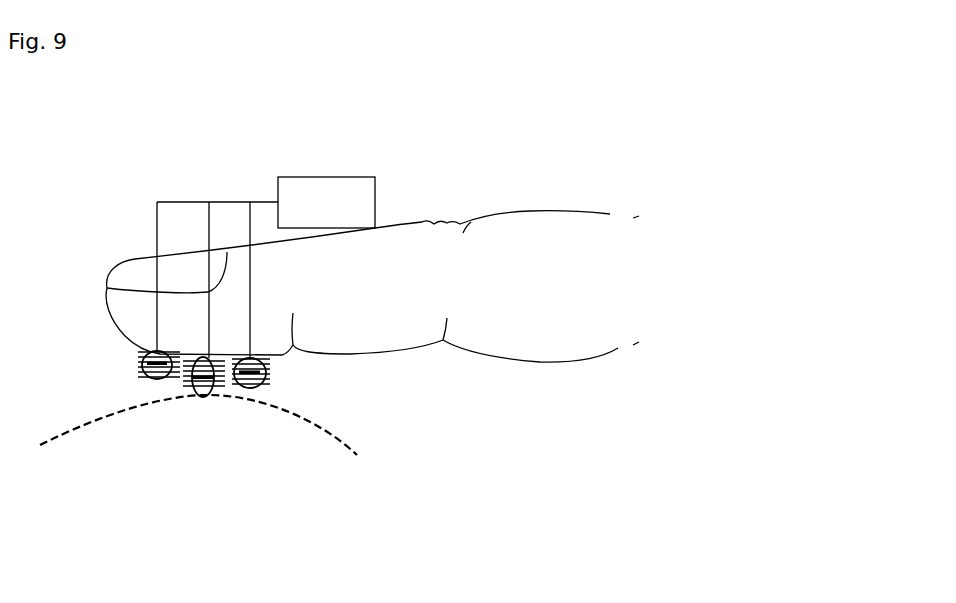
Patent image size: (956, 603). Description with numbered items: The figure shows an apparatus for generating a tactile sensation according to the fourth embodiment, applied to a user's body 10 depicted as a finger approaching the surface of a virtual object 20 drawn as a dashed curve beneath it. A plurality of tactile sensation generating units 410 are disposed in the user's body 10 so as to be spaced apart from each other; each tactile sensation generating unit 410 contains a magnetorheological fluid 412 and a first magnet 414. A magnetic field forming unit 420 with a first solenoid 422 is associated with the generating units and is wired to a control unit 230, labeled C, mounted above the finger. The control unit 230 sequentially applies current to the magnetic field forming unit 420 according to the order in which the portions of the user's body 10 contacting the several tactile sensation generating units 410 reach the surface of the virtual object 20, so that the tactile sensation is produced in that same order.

The body 10 is at (532, 230).
The virtual object 20 is at (313, 427).
The control unit 230 is at (355, 186).
The tactile sensation generating unit 410 is at (246, 462).
The magnetorheological fluid 412 is at (196, 395).
The first magnet 414 is at (208, 396).
The magnetic field forming unit 420 is at (195, 394).
The first solenoid 422 is at (165, 436).